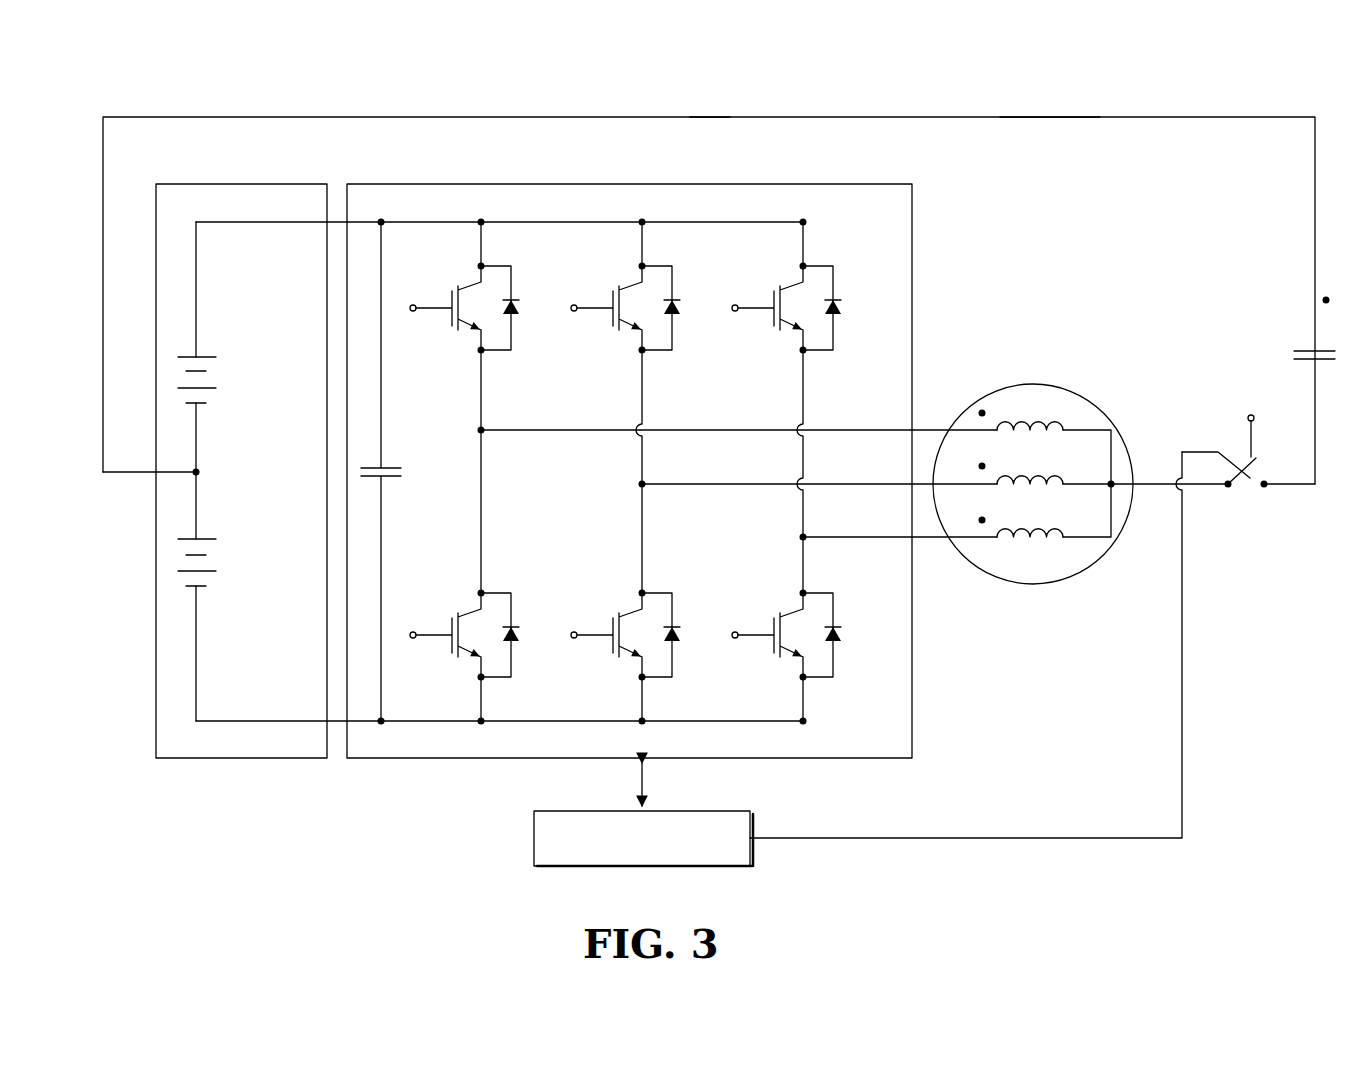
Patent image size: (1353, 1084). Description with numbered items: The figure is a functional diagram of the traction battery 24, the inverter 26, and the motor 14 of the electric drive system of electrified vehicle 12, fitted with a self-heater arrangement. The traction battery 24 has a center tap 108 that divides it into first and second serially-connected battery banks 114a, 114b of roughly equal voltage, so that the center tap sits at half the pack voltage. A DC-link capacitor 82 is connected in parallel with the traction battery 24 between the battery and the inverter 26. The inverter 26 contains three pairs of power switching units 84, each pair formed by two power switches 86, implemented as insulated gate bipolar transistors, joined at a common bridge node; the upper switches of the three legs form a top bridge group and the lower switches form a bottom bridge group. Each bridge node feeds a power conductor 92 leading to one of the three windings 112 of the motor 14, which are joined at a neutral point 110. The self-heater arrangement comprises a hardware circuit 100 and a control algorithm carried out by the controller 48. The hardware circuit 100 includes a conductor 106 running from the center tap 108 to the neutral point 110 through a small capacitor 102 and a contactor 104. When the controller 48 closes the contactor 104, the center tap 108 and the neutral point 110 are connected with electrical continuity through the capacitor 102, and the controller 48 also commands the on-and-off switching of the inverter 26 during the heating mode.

The electrified vehicle 12 is at (1065, 92).
The motor 14 is at (1072, 380).
The traction battery 24 is at (153, 509).
The inverter 26 is at (916, 258).
The controller 48 is at (588, 810).
The DC-link capacitor 82 is at (388, 466).
The power switching unit 84 is at (498, 354).
The power switch 86 is at (448, 305).
The power conductor 92 is at (532, 432).
The hardware circuit 100 is at (362, 112).
The capacitor 102 is at (1307, 349).
The contactor 104 is at (1248, 470).
The conductor 106 is at (708, 116).
The center tap 108 is at (199, 469).
The neutral point 110 is at (1112, 482).
The windings 112 is at (1018, 412).
The first battery bank 114a is at (205, 537).
The second battery bank 114b is at (205, 356).